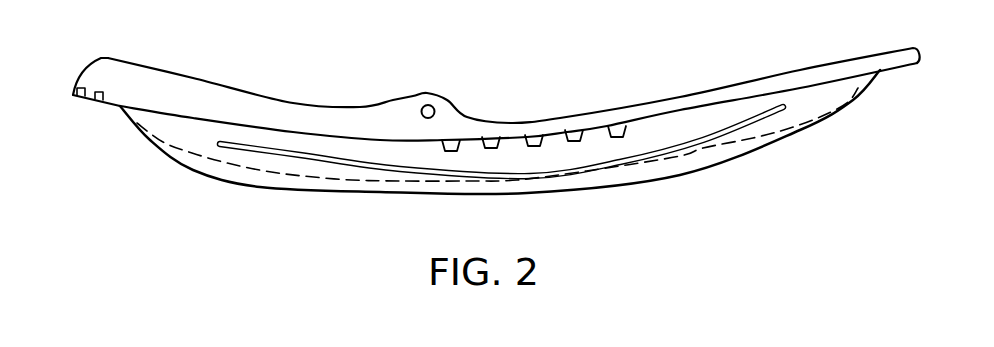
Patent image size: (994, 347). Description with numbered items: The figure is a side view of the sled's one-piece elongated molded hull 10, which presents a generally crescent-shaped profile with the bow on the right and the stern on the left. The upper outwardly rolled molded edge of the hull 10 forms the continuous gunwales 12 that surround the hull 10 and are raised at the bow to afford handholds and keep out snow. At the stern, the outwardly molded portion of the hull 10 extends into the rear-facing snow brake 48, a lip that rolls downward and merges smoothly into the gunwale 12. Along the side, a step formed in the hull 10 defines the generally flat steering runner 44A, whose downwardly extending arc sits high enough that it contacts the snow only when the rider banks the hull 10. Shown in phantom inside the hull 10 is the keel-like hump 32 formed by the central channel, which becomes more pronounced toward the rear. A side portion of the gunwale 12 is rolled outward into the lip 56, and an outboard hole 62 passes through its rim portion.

The hull 10 is at (152, 140).
The gunwales 12 is at (707, 88).
The keel-like hump 32 is at (793, 123).
The steering runner 44A is at (640, 158).
The snow brake 48 is at (93, 64).
The lip 56 is at (438, 97).
The outboard hole 62 is at (423, 106).